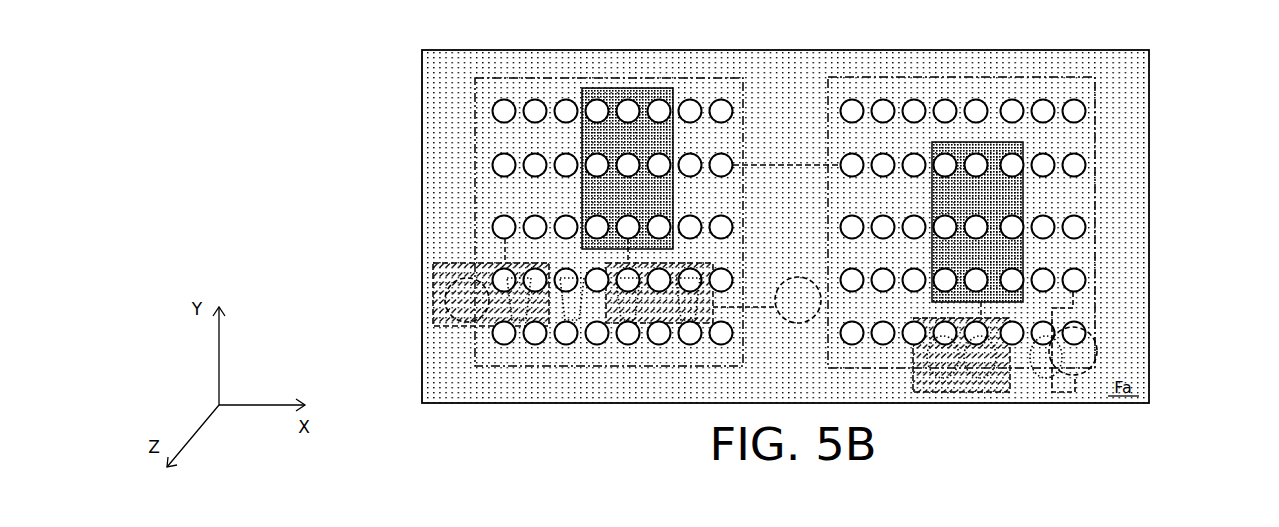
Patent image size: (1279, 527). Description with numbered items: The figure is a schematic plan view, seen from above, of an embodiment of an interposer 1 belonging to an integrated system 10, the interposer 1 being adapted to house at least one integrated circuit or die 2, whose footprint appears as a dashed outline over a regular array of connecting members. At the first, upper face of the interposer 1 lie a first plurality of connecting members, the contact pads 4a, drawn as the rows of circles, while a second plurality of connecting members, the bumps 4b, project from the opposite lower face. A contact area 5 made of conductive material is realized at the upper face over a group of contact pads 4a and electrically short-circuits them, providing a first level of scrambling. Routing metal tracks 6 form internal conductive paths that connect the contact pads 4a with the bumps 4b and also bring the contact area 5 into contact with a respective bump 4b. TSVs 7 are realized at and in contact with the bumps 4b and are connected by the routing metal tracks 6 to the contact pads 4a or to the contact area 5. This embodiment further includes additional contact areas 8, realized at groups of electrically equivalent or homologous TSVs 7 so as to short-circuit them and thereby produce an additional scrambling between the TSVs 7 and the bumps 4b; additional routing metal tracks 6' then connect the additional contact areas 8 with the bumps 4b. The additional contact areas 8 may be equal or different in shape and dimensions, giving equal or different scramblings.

The interposer 1 is at (1136, 115).
The integrated system 10 is at (387, 72).
The integrated circuit or die 2 is at (512, 61).
The contact area 5 is at (617, 79).
The routing metal tracks 6 is at (793, 166).
The additional routing metal tracks 6' is at (1099, 374).
The contact pads 4a is at (477, 164).
The bumps 4b is at (489, 330).
The TSVs 7 is at (459, 317).
The additional contact areas 8 is at (420, 289).